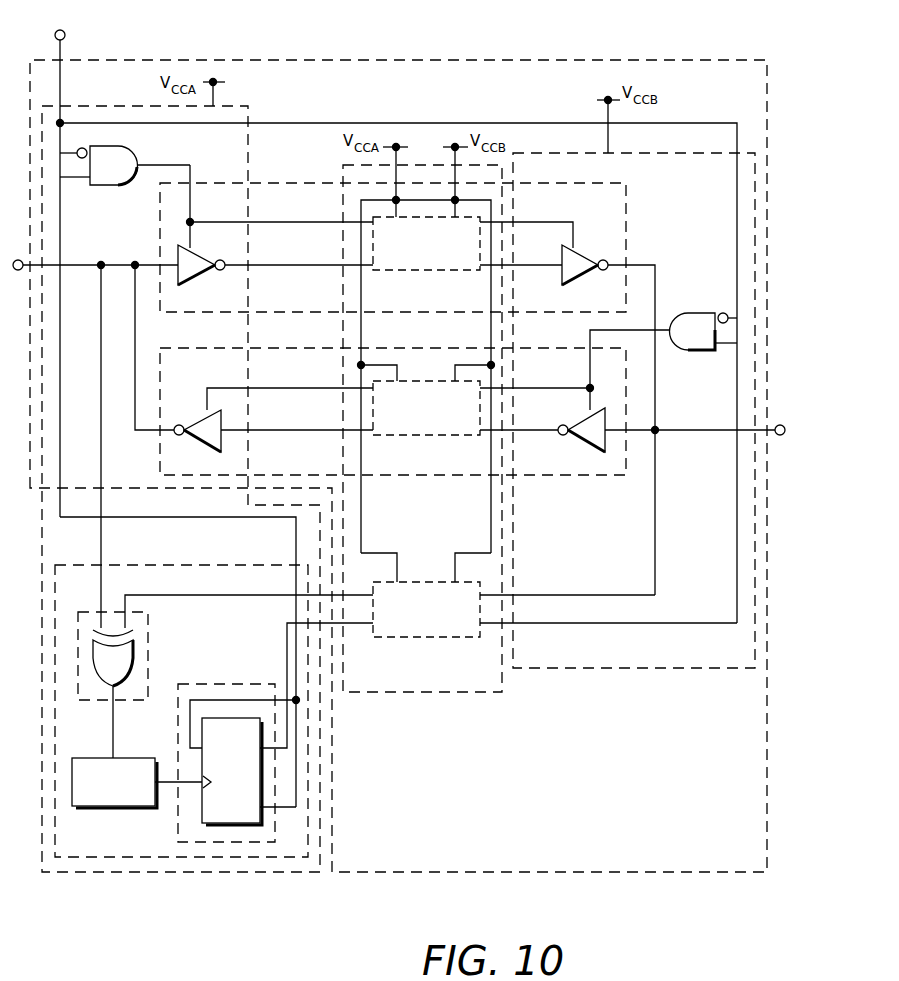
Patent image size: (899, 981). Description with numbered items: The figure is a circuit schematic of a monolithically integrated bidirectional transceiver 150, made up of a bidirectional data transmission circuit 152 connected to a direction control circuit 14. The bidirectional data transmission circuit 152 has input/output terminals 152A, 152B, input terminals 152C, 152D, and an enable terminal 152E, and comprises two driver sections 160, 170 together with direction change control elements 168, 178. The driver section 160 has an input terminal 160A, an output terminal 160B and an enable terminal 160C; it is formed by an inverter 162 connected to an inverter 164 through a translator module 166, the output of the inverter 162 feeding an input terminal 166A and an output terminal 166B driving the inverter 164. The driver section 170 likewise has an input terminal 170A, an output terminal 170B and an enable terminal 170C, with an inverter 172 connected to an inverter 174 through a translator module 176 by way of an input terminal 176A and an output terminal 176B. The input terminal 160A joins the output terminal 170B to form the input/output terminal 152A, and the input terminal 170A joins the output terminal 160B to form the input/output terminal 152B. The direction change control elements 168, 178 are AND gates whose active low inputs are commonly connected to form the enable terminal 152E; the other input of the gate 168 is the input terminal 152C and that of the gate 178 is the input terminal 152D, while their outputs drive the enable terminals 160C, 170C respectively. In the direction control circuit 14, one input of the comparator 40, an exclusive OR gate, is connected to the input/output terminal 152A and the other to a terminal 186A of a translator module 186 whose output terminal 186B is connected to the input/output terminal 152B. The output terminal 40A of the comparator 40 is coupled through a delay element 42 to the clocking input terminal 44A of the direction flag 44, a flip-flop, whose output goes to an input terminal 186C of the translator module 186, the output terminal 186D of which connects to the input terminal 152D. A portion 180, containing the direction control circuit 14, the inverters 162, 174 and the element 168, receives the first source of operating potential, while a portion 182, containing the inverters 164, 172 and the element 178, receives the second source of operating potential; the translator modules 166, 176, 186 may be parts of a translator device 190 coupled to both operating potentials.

The monolithically integrated bidirectional transceiver 150 is at (617, 924).
The bidirectional data transmission circuit 152 is at (672, 60).
The input/output terminal 152A is at (27, 248).
The input/output terminal 152B is at (778, 424).
The input terminal 152C is at (132, 518).
The input terminal 152D is at (525, 623).
The enable terminal 152E is at (65, 32).
The portion 180 is at (98, 106).
The direction change control element 168 is at (124, 147).
The driver section 160 is at (593, 183).
The input terminal 160A is at (156, 262).
The output terminal 160B is at (640, 265).
The enable terminal 160C is at (190, 178).
The inverter 162 is at (197, 282).
The inverter 164 is at (578, 282).
The translator module 166 is at (412, 272).
The input terminal 166A is at (340, 268).
The output terminal 166B is at (510, 263).
The driver section 170 is at (418, 348).
The input terminal 170A is at (626, 428).
The output terminal 170B is at (147, 433).
The enable terminal 170C is at (590, 345).
The inverter 172 is at (592, 447).
The inverter 174 is at (215, 452).
The translator module 176 is at (442, 437).
The input terminal 176A is at (533, 430).
The output terminal 176B is at (340, 432).
The direction change control element 178 is at (692, 351).
The portion 182 is at (650, 153).
The translator device 190 is at (343, 207).
The translator module 186 is at (429, 581).
The terminal 186A is at (290, 594).
The output terminal 186B is at (530, 595).
The input terminal 186C is at (343, 625).
The output terminal 186D is at (492, 638).
The direction control circuit 14 is at (205, 565).
The comparator 40 is at (150, 645).
The output terminal 40A is at (112, 745).
The delay element 42 is at (97, 810).
The direction flag 44 is at (232, 684).
The clocking input terminal 44A is at (197, 780).